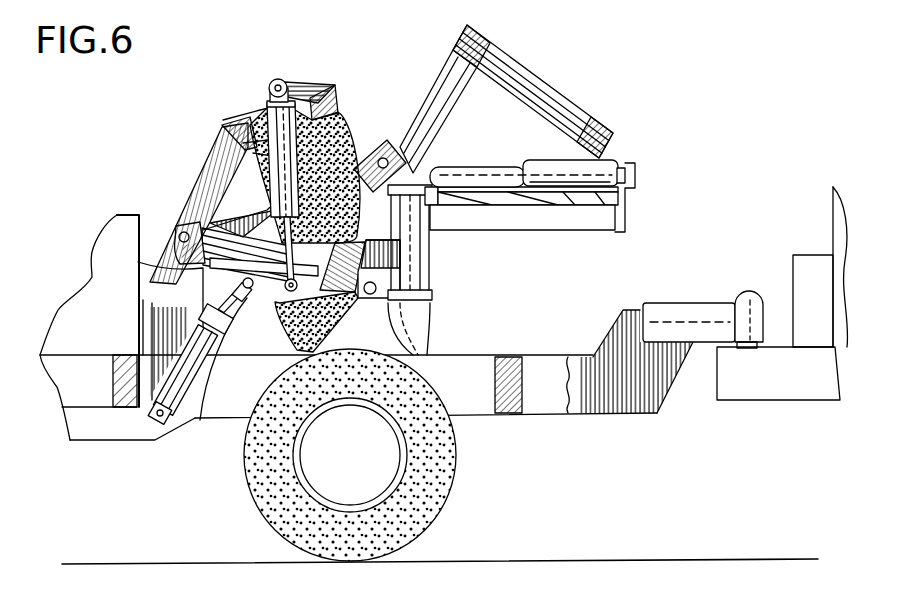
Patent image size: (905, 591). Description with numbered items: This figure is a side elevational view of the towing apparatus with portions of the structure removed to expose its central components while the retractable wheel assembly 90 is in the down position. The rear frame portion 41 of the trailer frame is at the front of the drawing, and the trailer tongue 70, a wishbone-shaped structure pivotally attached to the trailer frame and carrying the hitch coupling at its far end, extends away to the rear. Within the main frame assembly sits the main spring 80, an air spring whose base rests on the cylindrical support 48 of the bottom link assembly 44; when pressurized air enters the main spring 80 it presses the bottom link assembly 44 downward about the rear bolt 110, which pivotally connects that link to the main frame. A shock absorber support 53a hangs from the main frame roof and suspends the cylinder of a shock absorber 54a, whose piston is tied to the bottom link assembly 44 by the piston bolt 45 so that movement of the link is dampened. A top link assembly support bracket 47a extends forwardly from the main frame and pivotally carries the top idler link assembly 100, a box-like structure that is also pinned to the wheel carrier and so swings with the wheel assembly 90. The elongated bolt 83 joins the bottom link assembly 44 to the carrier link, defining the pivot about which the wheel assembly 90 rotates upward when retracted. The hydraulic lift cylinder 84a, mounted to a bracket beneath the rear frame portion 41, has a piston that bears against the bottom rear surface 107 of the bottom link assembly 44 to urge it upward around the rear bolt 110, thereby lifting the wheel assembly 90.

The rear frame portion 41 is at (92, 263).
The bottom link assembly 44 is at (202, 197).
The piston bolt 45 is at (277, 297).
The top link assembly support bracket 47a is at (368, 150).
The cylindrical support 48 is at (347, 260).
The shock absorber support 53a is at (300, 83).
The shock absorber 54a is at (277, 126).
The trailer tongue 70 is at (553, 395).
The main spring 80 is at (331, 195).
The elongated bolt 83 is at (372, 287).
The hydraulic lift cylinder 84a is at (183, 418).
The retractable wheel assembly 90 is at (408, 345).
The top idler link assembly 100 is at (525, 78).
The bottom rear surface 107 is at (117, 212).
The rear bolt 110 is at (178, 235).